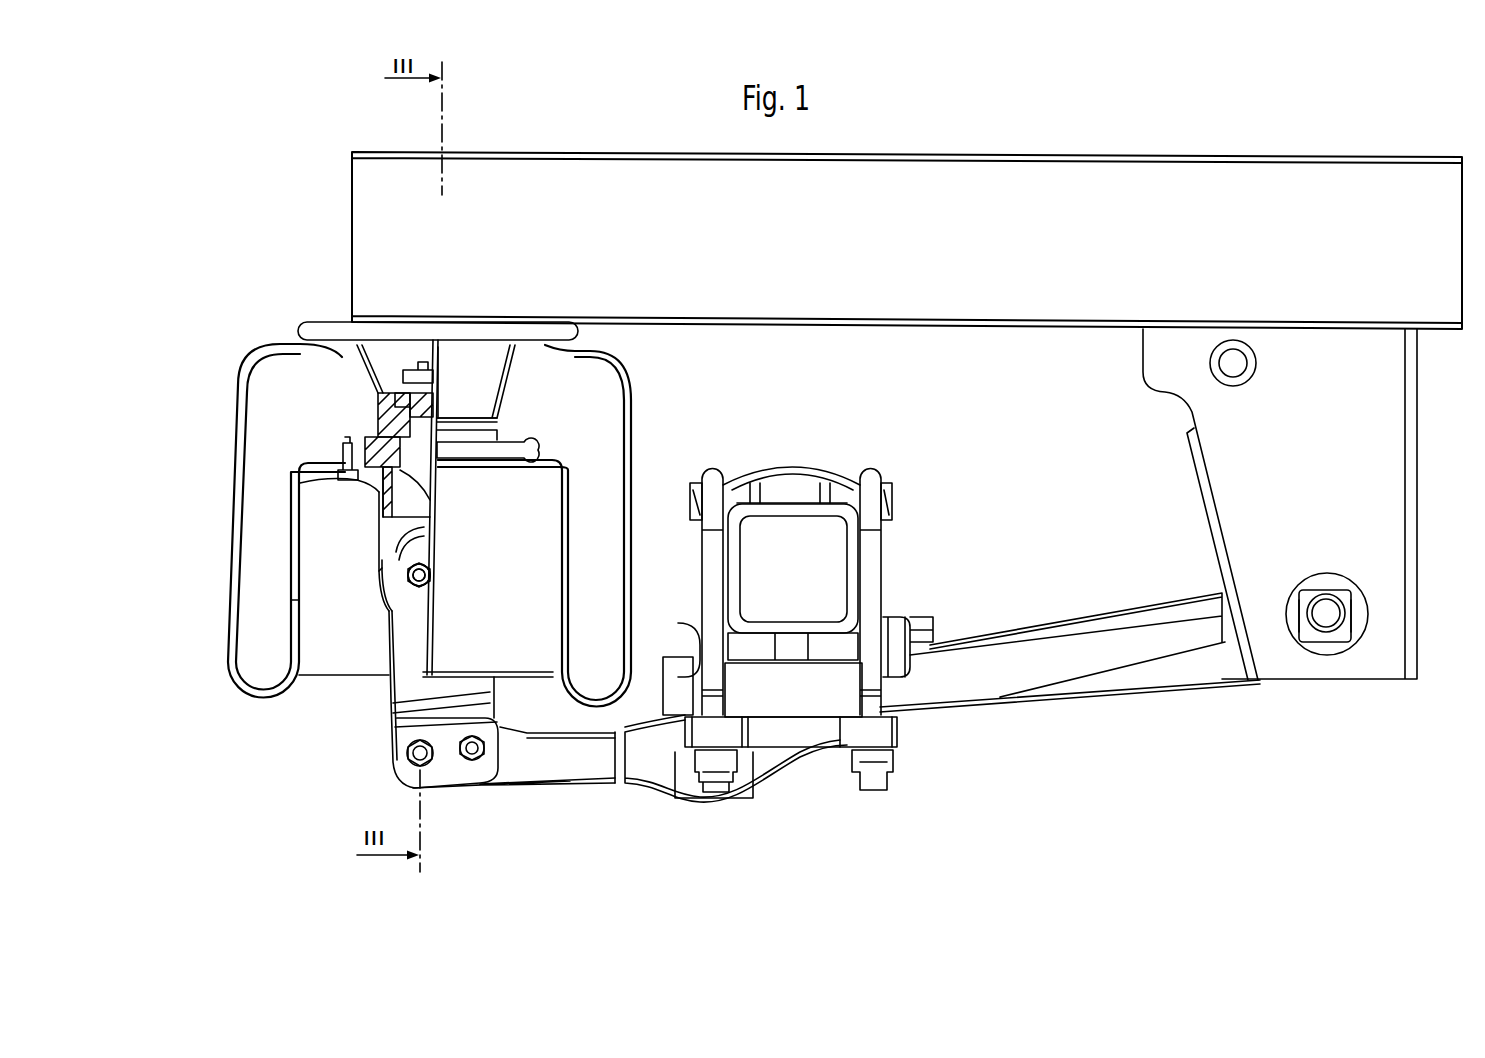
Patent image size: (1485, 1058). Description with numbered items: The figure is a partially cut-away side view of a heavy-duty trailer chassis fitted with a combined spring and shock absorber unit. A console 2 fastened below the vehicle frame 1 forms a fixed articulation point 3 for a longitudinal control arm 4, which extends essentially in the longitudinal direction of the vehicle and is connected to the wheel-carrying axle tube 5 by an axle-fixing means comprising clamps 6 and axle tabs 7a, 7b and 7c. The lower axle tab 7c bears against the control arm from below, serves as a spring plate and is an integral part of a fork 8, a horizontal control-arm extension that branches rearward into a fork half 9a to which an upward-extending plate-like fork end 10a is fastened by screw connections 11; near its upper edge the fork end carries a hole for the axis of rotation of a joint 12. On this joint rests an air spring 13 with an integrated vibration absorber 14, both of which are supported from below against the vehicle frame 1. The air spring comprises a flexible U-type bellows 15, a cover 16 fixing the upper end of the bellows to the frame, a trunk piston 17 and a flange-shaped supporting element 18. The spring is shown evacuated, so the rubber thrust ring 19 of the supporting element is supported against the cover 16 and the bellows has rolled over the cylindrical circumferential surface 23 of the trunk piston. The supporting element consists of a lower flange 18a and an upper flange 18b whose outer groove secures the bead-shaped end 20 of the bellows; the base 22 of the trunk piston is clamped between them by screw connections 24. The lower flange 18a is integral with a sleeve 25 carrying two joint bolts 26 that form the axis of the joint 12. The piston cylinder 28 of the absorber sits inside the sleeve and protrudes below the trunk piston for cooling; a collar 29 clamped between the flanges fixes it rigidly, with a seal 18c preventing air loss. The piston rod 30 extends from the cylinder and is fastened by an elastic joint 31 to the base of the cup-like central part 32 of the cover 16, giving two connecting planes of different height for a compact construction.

The vehicle frame 1 is at (1410, 186).
The console 2 is at (1385, 475).
The articulation point 3 is at (1322, 625).
The longitudinal control arm 4 is at (1022, 678).
The axle tube 5 is at (862, 566).
The clamps 6 is at (875, 540).
The axle tab 7a is at (793, 483).
The axle tab 7b is at (912, 612).
The lower axle tab 7c is at (885, 735).
The fork 8 is at (643, 767).
The fork half 9a is at (517, 767).
The fork end 10a is at (397, 687).
The screw connections 11 is at (472, 760).
The joint 12 is at (431, 582).
The joint bolts 26 is at (419, 575).
The air spring 13 is at (233, 368).
The vibration absorber 14 is at (378, 530).
The U-type bellows 15 is at (624, 375).
The cover 16 is at (592, 336).
The trunk piston 17 is at (488, 508).
The supporting element 18 is at (550, 440).
The lower flange 18a is at (337, 477).
The upper flange 18b is at (363, 440).
The seal 18c is at (432, 507).
The thrust ring 19 is at (507, 410).
The bead-shaped end 20 is at (543, 457).
The base 22 is at (330, 452).
The circumferential surface 23 is at (283, 620).
The screw connections 24 is at (372, 502).
The sleeve 25 is at (296, 600).
The piston cylinder 28 is at (378, 571).
The collar 29 is at (408, 470).
The piston rod 30 is at (398, 430).
The elastic joint 31 is at (437, 383).
The central part 32 is at (515, 380).